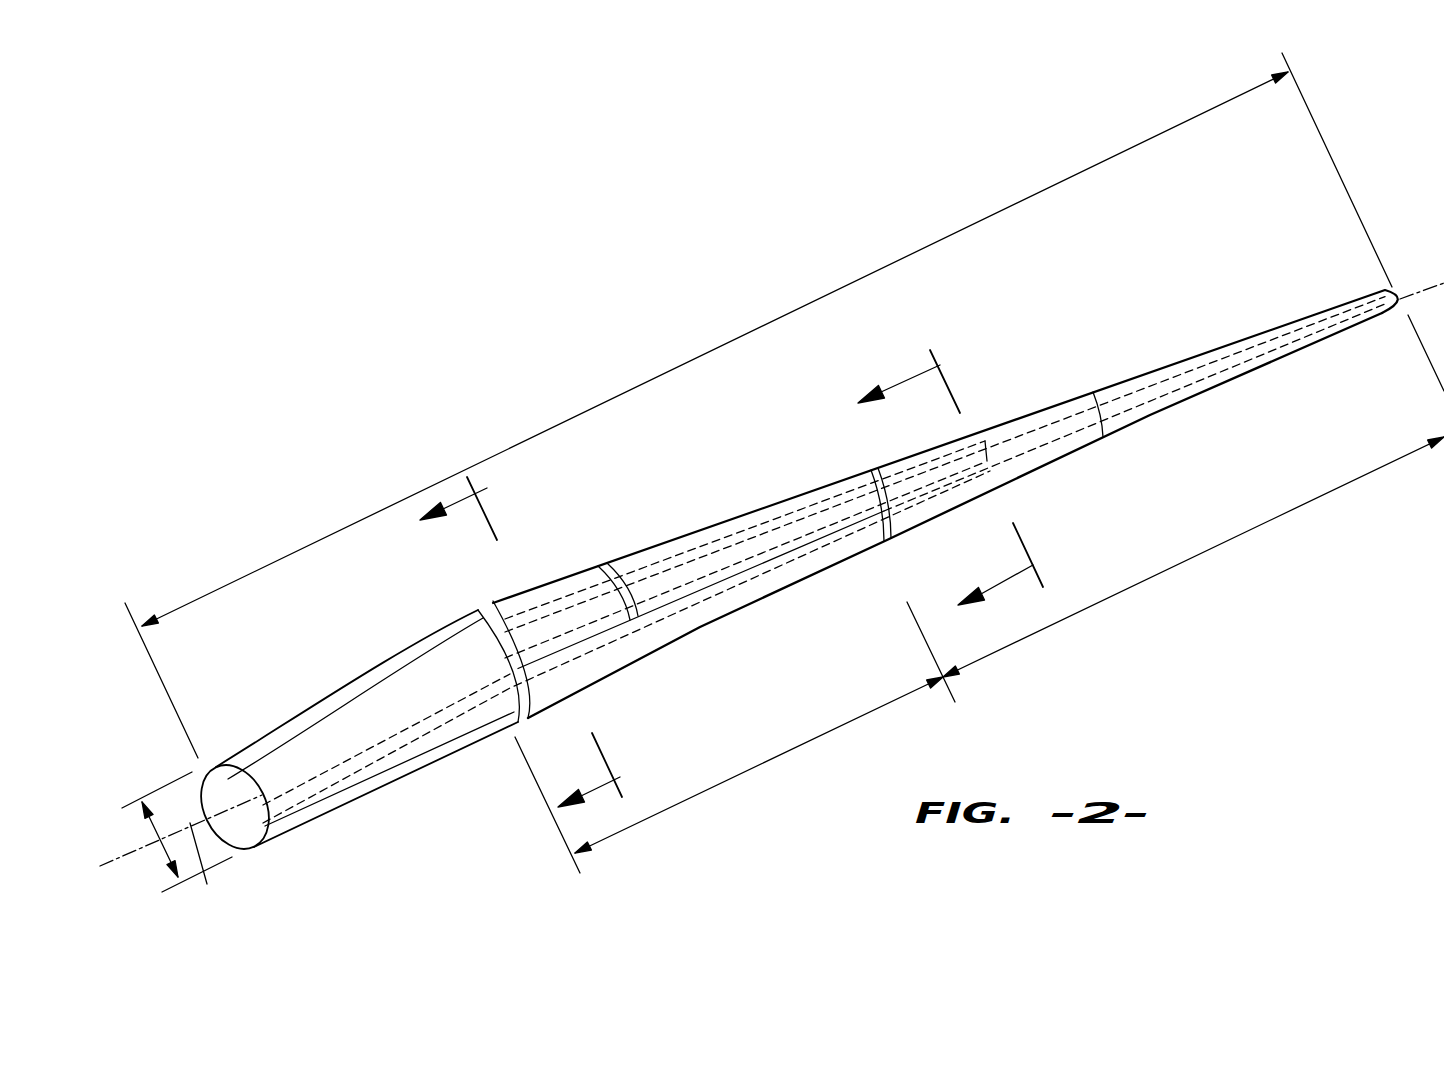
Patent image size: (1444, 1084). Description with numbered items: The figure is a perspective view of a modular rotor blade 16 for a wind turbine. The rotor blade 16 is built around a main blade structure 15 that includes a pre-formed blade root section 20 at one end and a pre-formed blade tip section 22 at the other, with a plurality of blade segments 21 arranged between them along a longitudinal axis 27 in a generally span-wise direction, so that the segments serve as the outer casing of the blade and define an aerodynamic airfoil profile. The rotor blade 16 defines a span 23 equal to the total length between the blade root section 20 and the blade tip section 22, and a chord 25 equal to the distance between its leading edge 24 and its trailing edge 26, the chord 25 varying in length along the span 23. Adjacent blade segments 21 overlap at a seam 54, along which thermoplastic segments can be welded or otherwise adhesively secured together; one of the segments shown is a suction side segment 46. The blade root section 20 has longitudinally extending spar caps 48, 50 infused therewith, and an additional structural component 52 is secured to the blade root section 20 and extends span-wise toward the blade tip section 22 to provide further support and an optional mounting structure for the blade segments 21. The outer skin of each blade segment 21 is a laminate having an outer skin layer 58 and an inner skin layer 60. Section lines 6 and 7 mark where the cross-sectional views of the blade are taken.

The section line 6- 6 is at (521, 642).
The section line 7- 7 is at (947, 499).
The main blade structure 15 is at (382, 748).
The rotor blade 16 is at (864, 446).
The blade root section 20 is at (242, 752).
The blade segment 21 is at (498, 600).
The blade tip section 22 is at (1257, 369).
The span 23 is at (737, 338).
The leading edge 24 is at (764, 598).
The chord 25 is at (162, 848).
The trailing edge 26 is at (556, 588).
The longitudinal axis 27 is at (207, 886).
The suction side segment 46 is at (1045, 418).
The spar cap 48 is at (202, 803).
The spar cap 50 is at (317, 783).
The structural component 52 is at (713, 545).
The seam 54 is at (607, 563).
The outer skin layer 58 is at (727, 781).
The inner skin layer 60 is at (1173, 566).